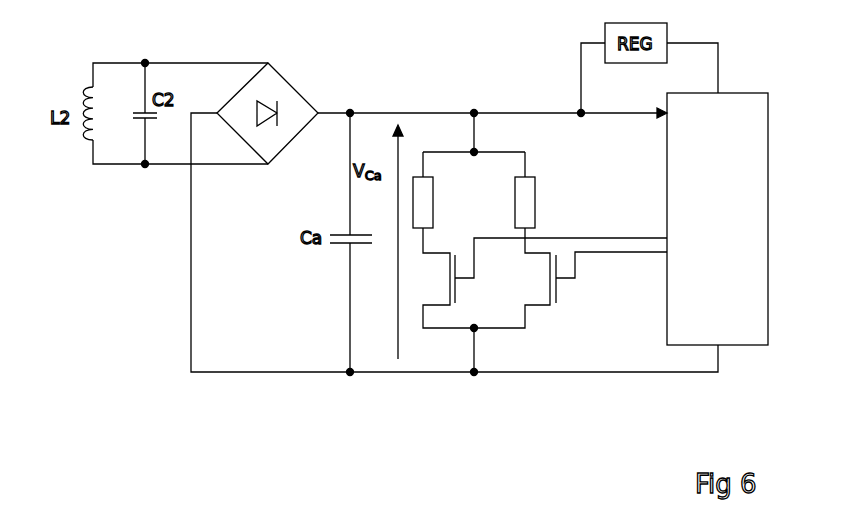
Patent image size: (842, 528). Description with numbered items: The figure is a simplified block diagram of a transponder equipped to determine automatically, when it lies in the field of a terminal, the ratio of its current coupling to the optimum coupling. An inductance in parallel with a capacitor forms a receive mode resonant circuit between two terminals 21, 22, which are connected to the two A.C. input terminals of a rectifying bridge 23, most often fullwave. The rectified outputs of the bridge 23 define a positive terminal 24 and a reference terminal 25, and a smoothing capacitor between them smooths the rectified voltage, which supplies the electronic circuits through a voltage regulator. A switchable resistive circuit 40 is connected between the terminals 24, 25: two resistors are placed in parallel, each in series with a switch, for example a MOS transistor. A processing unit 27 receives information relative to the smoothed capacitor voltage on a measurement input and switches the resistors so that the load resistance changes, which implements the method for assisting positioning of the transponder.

The terminal 21 is at (146, 63).
The terminal 22 is at (145, 164).
The rectifying bridge 23 is at (297, 87).
The positive terminal 24 is at (350, 113).
The reference terminal 25 is at (350, 372).
The processing unit 27 is at (747, 93).
The switchable resistive circuit 40 is at (466, 188).